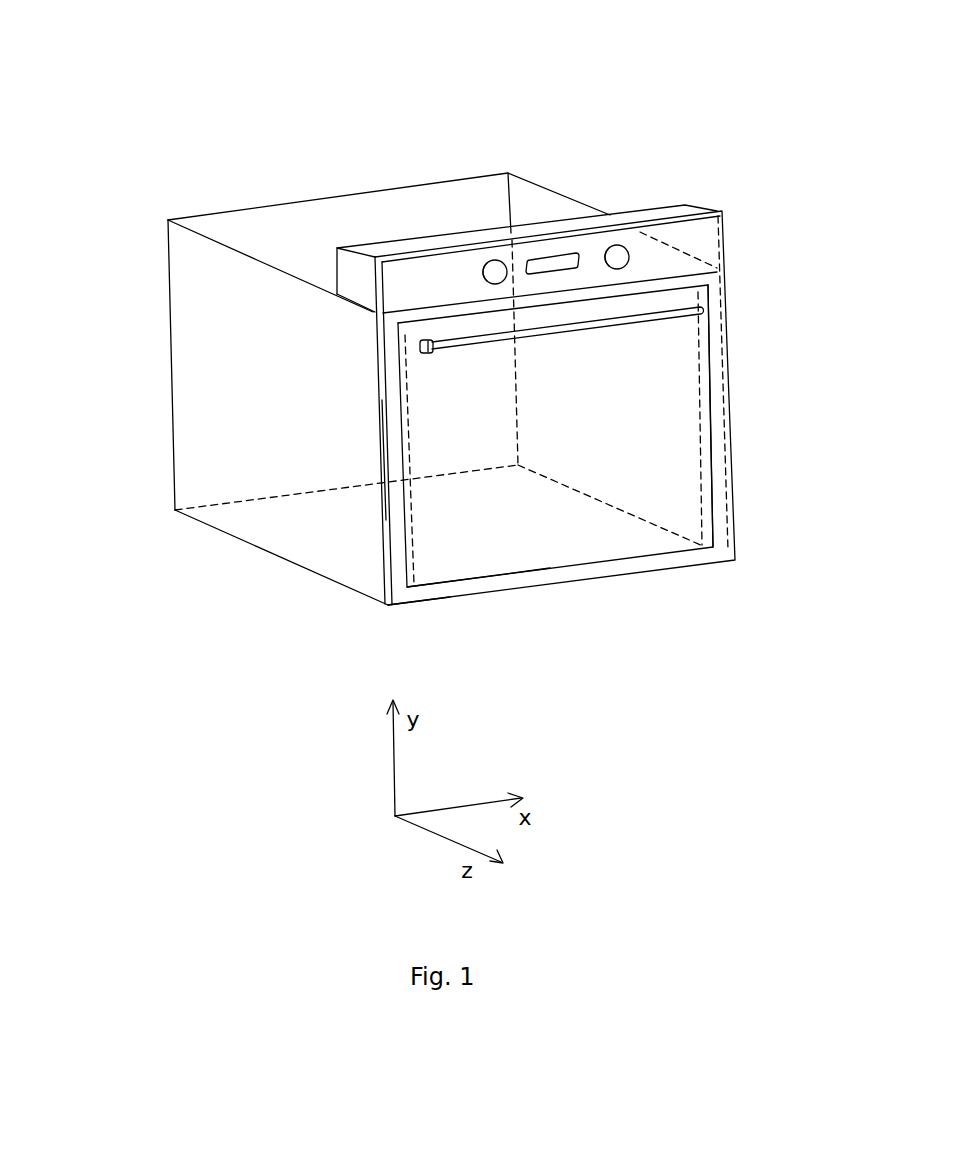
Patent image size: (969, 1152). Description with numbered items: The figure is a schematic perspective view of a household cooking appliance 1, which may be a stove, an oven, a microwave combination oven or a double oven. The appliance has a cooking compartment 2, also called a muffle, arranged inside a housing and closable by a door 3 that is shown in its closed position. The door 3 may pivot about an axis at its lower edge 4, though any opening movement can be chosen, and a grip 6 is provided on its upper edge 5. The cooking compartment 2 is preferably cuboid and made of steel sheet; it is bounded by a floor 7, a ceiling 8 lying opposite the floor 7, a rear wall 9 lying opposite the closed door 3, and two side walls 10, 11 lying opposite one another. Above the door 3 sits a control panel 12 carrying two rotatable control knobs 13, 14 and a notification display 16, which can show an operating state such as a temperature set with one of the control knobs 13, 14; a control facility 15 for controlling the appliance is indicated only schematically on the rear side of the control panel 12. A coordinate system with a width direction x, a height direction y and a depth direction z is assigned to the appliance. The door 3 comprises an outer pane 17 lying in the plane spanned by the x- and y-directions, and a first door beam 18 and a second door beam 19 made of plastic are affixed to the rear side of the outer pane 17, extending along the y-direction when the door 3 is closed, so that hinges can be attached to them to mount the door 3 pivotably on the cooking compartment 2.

The household cooking appliance 1 is at (108, 226).
The cooking compartment 2 is at (489, 531).
The door 3 is at (594, 553).
The lower edge 4 is at (549, 568).
The upper edge 5 is at (452, 316).
The grip 6 is at (471, 347).
The floor 7 is at (367, 578).
The ceiling 8 is at (233, 230).
The rear wall 9 is at (187, 397).
The side wall 10 is at (192, 517).
The side wall 11 is at (717, 457).
The control panel 12 is at (733, 243).
The control knob 13 is at (495, 259).
The control knob 14 is at (615, 244).
The control facility 15 is at (377, 243).
The notification display 16 is at (547, 256).
The outer pane 17 is at (462, 580).
The first door beam 18 is at (383, 458).
The second door beam 19 is at (720, 373).